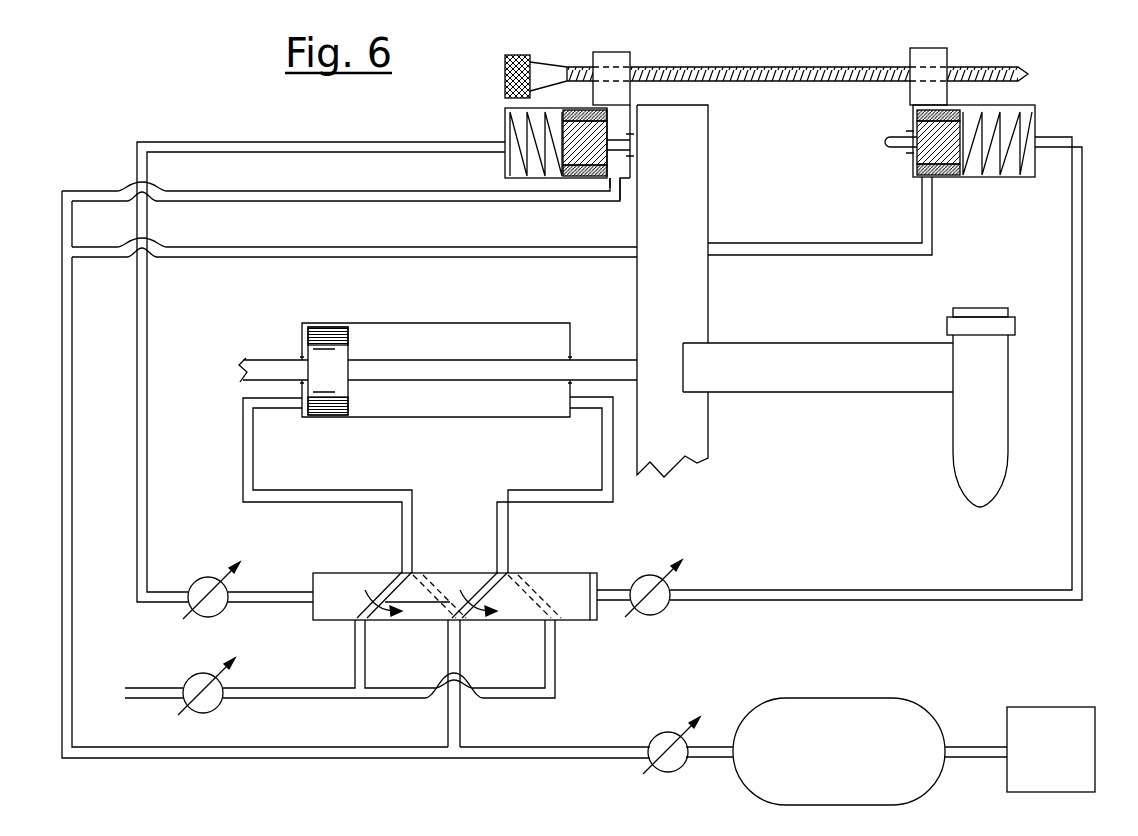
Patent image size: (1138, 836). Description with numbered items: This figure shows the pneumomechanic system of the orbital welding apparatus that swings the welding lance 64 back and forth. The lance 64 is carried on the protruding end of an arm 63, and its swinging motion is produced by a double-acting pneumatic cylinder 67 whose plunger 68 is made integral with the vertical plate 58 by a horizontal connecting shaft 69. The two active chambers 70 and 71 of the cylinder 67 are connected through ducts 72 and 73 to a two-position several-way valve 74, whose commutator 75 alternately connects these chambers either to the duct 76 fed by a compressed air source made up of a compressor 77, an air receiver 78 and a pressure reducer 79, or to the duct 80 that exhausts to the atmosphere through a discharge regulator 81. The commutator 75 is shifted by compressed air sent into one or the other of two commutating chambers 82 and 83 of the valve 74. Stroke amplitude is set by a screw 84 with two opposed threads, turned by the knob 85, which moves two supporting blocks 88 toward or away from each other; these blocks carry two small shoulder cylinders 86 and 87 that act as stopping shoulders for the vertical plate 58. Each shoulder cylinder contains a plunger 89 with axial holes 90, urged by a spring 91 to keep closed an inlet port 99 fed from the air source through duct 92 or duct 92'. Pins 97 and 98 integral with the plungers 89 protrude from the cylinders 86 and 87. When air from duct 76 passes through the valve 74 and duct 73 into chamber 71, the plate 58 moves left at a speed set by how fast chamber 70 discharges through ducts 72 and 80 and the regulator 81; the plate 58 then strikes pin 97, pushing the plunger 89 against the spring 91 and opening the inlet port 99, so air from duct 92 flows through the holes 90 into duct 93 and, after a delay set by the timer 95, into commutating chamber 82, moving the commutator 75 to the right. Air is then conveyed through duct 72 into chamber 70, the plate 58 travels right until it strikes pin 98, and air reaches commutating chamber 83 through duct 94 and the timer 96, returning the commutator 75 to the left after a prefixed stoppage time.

The vertical plate 58 is at (687, 288).
The arm 63 is at (812, 352).
The welding lance 64 is at (967, 440).
The double-acting pneumatic cylinder 67 is at (449, 430).
The plunger 68 is at (340, 400).
The horizontal connecting shaft 69 is at (600, 360).
The active chamber 70 is at (302, 345).
The active chamber 71 is at (438, 335).
The duct 72 is at (243, 489).
The duct 73 is at (590, 496).
The two-position several-way valve 74 is at (542, 562).
The commutator 75 is at (448, 592).
The duct 76 is at (461, 718).
The compressor 77 is at (1052, 718).
The air receiver 78 is at (842, 715).
The pressure reducer 79 is at (660, 736).
The duct 80 is at (376, 698).
The discharge regulator 81 is at (212, 708).
The commutating chamber 82 is at (330, 585).
The commutating chamber 83 is at (578, 585).
The screw 84 is at (757, 67).
The knob 85 is at (545, 73).
The small shoulder cylinder 86 is at (505, 170).
The small shoulder cylinder 87 is at (1030, 105).
The movable supporting block 88 is at (622, 62).
The plunger 89 is at (600, 122).
The axial holes 90 is at (588, 118).
The spring 91 is at (520, 135).
The duct 92 is at (356, 456).
The duct 92' is at (820, 232).
The duct 93 is at (222, 142).
The duct 94 is at (1083, 406).
The timer 95 is at (200, 580).
The timer 96 is at (655, 612).
The pin 97 is at (632, 145).
The pin 98 is at (885, 142).
The inlet port 99 is at (625, 188).